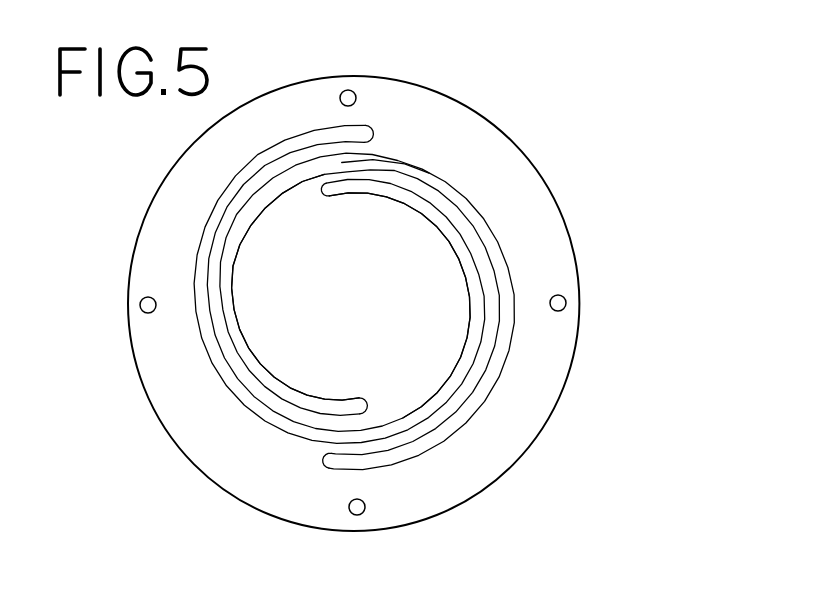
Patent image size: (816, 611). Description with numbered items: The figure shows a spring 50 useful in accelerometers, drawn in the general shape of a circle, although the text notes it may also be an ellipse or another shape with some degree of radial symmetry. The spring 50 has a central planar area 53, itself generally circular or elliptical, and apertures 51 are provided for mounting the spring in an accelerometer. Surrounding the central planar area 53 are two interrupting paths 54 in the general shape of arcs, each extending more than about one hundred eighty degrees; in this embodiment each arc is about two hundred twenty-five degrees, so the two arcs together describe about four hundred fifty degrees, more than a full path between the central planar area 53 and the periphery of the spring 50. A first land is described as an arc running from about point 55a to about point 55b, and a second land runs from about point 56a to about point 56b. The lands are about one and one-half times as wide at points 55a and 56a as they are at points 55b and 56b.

The spring 50 is at (497, 123).
The apertures 51 is at (566, 296).
The central planar area 53 is at (360, 316).
The interrupting paths 54 is at (407, 163).
The point 55a is at (333, 173).
The point 55b is at (342, 448).
The point 56a is at (363, 422).
The point 56b is at (350, 142).